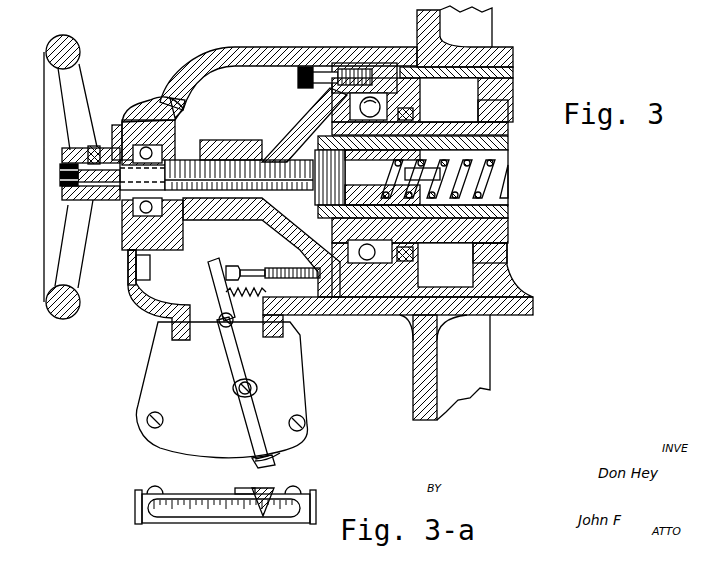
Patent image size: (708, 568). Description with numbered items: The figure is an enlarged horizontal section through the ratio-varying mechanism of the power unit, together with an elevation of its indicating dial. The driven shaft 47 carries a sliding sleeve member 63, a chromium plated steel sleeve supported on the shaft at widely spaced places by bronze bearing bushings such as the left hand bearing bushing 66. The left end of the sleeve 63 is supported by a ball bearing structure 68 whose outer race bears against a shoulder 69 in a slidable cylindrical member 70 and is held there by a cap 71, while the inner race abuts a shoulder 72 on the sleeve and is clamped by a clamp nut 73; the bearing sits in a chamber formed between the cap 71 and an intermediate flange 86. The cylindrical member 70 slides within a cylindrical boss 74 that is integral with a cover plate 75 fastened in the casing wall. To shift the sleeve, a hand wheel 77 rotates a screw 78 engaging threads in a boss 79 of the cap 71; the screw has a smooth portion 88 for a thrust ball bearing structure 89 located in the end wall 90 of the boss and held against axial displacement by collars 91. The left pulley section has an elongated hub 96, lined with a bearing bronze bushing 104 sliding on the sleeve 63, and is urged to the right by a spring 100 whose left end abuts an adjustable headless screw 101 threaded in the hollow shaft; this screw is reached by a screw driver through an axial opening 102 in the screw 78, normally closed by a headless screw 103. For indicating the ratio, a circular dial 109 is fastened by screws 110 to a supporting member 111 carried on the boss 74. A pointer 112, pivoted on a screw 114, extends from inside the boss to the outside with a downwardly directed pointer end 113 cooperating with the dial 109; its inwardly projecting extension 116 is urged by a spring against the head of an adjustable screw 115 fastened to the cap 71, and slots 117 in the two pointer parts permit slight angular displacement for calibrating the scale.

In FIG. 3, the driven shaft 47 is at (507, 143).
In FIG. 3, the sliding sleeve member 63 is at (508, 67).
In FIG. 3, the left hand bearing bushing 66 is at (333, 127).
In FIG. 3, the ball bearing structure 68 is at (322, 67).
In FIG. 3, the shoulder 69 is at (392, 95).
In FIG. 3, the slidable cylindrical member 70 is at (487, 47).
In FIG. 3, the cap 71 is at (287, 130).
In FIG. 3, the shoulder 72 is at (378, 315).
In FIG. 3, the clamp nut 73 is at (333, 246).
In FIG. 3, the cylindrical boss 74 is at (312, 315).
In FIG. 3, the cover plate 75 is at (413, 395).
In FIG. 3, the hand wheel 77 is at (52, 318).
In FIG. 3, the screw 78 is at (187, 160).
In FIG. 3, the boss 79 is at (190, 215).
In FIG. 3, the intermediate flange 86 is at (420, 105).
In FIG. 3, the smooth portion 88 is at (108, 226).
In FIG. 3, the thrust ball bearing structure 89 is at (120, 128).
In FIG. 3, the end wall 90 is at (135, 125).
In FIG. 3, the collars 91 is at (180, 97).
In FIG. 3, the hub 96 is at (510, 100).
In FIG. 3, the spring 100 is at (500, 180).
In FIG. 3, the adjustable headless screw 101 is at (333, 162).
In FIG. 3, the axial opening 102 is at (73, 153).
In FIG. 3, the headless screw 103 is at (57, 188).
In FIG. 3, the bearing bronze bushing 104 is at (508, 115).
In FIG. 3, the circular dial 109 is at (290, 443).
In FIG. 3a, the circular dial 109 is at (152, 518).
In FIG. 3, the screws 110 is at (307, 424).
In FIG. 3a, the screws 110 is at (292, 488).
In FIG. 3, the supporting member 111 is at (293, 383).
In FIG. 3a, the supporting member 111 is at (136, 503).
In FIG. 3, the pointer 112 is at (242, 415).
In FIG. 3a, the pointer end 113 is at (262, 515).
In FIG. 3, the screw 114 is at (216, 328).
In FIG. 3, the adjustable screw 115 is at (265, 262).
In FIG. 3, the extension 116 is at (212, 275).
In FIG. 3, the slots 117 is at (233, 390).